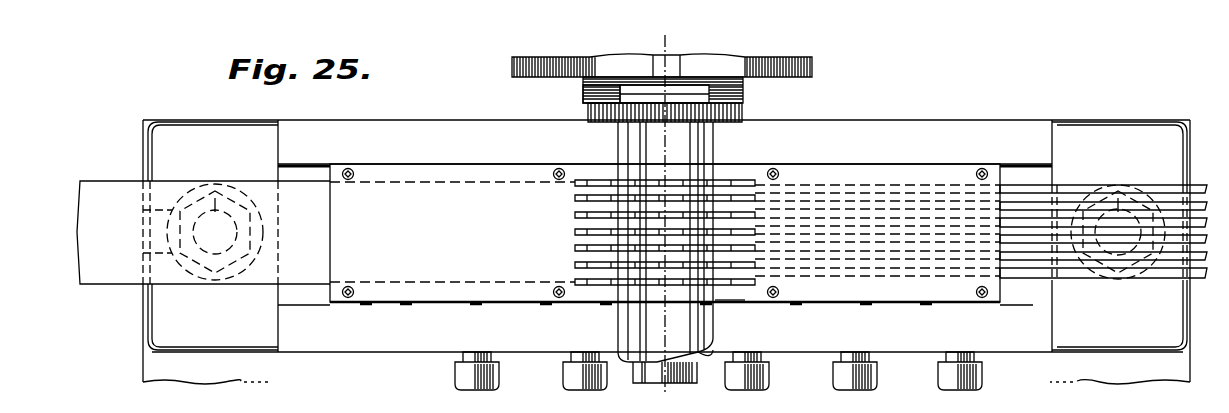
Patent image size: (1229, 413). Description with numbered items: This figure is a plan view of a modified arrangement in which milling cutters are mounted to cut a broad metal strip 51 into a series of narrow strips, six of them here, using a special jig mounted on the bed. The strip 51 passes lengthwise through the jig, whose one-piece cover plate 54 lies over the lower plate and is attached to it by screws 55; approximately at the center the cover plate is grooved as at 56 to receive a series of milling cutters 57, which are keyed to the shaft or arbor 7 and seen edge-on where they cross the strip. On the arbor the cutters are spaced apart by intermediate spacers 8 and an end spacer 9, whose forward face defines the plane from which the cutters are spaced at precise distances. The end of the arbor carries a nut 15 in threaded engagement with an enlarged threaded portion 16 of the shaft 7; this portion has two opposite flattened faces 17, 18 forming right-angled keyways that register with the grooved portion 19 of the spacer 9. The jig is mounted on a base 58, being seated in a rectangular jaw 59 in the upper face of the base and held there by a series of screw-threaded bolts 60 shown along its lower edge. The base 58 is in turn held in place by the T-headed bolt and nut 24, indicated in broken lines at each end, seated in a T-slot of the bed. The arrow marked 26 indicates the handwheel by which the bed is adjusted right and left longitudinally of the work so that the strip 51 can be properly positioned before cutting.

The shaft or arbor 7 is at (672, 386).
The intermediate spacers 8 is at (652, 270).
The end spacer 9 is at (665, 206).
The nut 15 is at (814, 67).
The enlarged threaded portion 16 is at (745, 96).
The flattened face 17 is at (712, 94).
The flattened face 18 is at (620, 96).
The grooved portion 19 is at (745, 109).
The T-headed bolt and nut 24 is at (221, 187).
The handwheel 26 is at (680, 42).
The metal strip 51 is at (86, 230).
The cover plate 54 is at (608, 172).
The screws 55 is at (350, 168).
The groove 56 is at (730, 302).
The milling cutters 57 is at (575, 282).
The base 58 is at (433, 119).
The rectangular jaw 59 is at (433, 303).
The screw-threaded bolts 60 is at (462, 372).